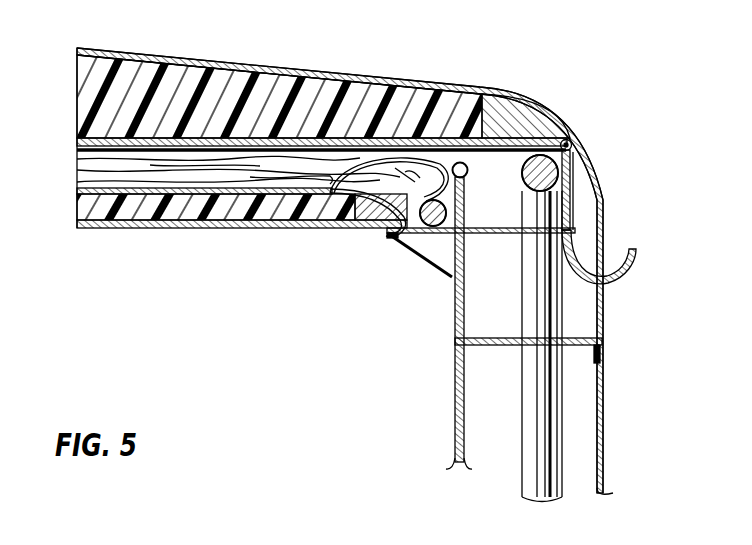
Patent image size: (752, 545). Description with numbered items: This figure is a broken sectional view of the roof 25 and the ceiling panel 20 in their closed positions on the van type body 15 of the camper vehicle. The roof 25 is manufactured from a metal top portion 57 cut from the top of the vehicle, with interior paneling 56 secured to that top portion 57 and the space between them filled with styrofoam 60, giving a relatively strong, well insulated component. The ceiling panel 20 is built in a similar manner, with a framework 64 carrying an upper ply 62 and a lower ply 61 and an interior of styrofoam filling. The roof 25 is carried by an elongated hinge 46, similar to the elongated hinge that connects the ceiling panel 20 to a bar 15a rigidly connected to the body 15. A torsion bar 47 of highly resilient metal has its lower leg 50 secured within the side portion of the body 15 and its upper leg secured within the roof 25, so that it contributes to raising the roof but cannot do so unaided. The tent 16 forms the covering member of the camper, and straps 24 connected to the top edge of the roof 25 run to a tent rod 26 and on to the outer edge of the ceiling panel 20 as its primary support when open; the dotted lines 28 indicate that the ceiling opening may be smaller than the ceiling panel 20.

The van type body 15 is at (607, 346).
The bar 15a is at (600, 216).
The tent 16 is at (280, 170).
The ceiling panel 20 is at (220, 229).
The straps 24 is at (78, 153).
The roof 25 is at (333, 71).
The tent rod 26 is at (423, 240).
The dotted lines 28 is at (401, 233).
The elongated hinge 46 is at (573, 147).
The torsion bar 47 is at (522, 186).
The lower leg 50 is at (531, 398).
The interior paneling 56 is at (78, 141).
The top portion 57 is at (212, 66).
The styrofoam 60 is at (263, 87).
The lower ply 61 is at (80, 229).
The upper ply 62 is at (78, 191).
The framework 64 is at (361, 229).